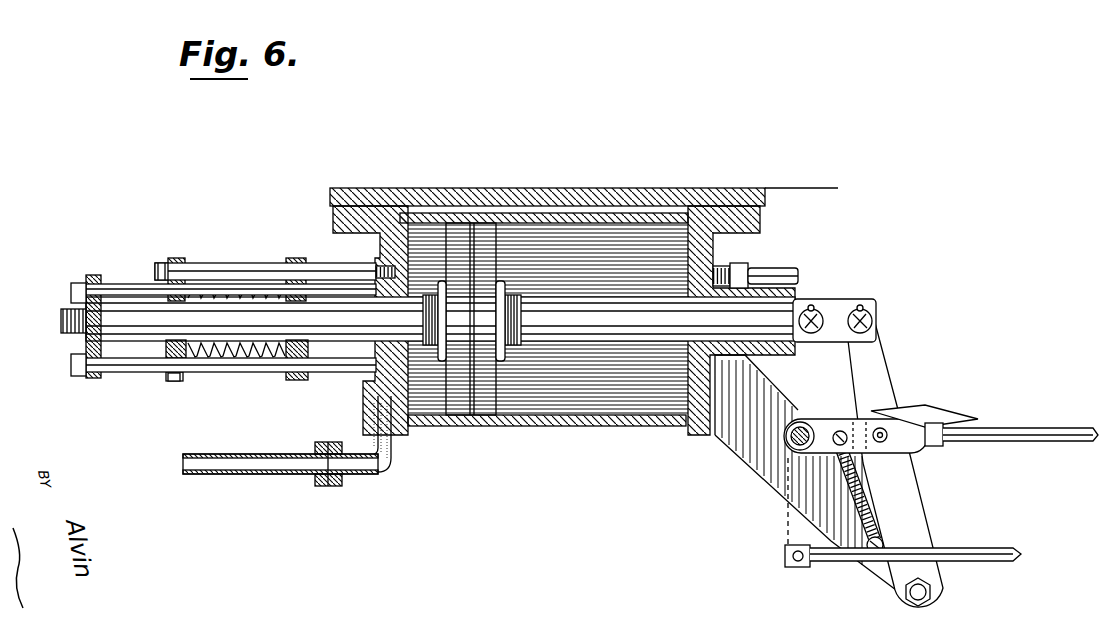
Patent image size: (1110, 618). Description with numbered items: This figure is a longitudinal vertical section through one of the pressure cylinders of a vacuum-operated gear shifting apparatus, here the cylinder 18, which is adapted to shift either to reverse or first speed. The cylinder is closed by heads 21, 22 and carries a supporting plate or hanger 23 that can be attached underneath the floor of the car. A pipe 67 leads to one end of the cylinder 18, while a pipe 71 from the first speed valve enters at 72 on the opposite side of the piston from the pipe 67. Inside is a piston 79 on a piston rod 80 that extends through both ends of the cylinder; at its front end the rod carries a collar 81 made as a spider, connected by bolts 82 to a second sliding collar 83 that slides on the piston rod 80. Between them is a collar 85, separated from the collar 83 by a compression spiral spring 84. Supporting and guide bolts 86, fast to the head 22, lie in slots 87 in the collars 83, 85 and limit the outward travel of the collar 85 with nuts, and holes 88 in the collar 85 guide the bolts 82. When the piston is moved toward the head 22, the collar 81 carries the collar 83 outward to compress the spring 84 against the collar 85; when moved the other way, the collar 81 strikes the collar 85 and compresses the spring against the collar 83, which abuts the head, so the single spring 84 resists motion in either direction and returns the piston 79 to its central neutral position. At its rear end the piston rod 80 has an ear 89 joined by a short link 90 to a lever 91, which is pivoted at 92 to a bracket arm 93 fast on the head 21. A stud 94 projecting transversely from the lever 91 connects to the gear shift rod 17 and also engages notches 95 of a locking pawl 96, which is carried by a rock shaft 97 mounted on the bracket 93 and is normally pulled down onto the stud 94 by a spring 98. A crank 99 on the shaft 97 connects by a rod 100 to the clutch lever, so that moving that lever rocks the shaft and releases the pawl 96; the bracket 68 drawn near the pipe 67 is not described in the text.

The gear shift rod 17 is at (1072, 435).
The cylinder 18 is at (594, 418).
The cylinder head 21 is at (692, 428).
The cylinder head 22 is at (358, 208).
The supporting plate or hanger 23 is at (668, 180).
The pipe 67 is at (218, 466).
The bracket 68 is at (393, 420).
The pipe 71 is at (772, 262).
The pipe connection 72 is at (712, 254).
The piston 79 is at (477, 225).
The piston rod 80 is at (592, 335).
The collar 81 is at (88, 268).
The bolts 82 is at (118, 277).
The sliding collar 83 is at (292, 372).
The compression spiral spring 84 is at (232, 350).
The collar 85 is at (154, 258).
The supporting and guide bolts 86 is at (238, 258).
The slots 87 is at (170, 256).
The holes 88 is at (180, 368).
The ear 89 is at (810, 302).
The short link 90 is at (835, 297).
The lever 91 is at (872, 344).
The pivot 92 is at (935, 584).
The bracket arm 93 is at (770, 478).
The stud 94 is at (875, 413).
The notches 95 is at (880, 424).
The locking pawl 96 is at (945, 398).
The rock shaft 97 is at (785, 438).
The spring 98 is at (857, 470).
The crank 99 is at (783, 528).
The rod 100 is at (915, 532).